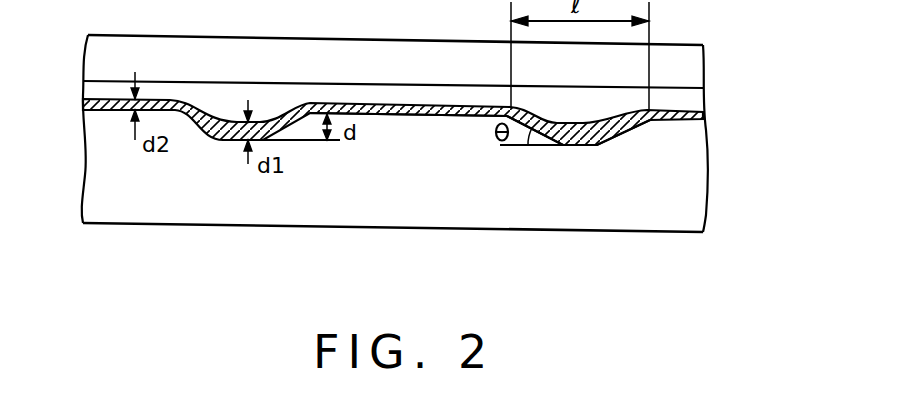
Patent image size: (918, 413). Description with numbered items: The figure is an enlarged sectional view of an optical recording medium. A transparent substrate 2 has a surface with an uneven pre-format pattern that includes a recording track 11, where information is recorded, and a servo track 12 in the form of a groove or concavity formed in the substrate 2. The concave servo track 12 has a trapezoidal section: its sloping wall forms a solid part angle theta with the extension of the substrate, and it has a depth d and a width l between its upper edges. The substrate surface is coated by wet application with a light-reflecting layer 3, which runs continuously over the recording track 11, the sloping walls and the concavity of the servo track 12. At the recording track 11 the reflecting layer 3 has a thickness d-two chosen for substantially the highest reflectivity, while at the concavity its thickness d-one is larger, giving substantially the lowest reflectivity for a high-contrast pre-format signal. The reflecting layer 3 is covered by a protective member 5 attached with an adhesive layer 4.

The transparent substrate 2 is at (688, 181).
The light-reflecting layer 3 is at (690, 116).
The adhesive layer 4 is at (687, 101).
The protective member 5 is at (683, 71).
The recording track 11 is at (403, 117).
The servo track 12 is at (580, 146).